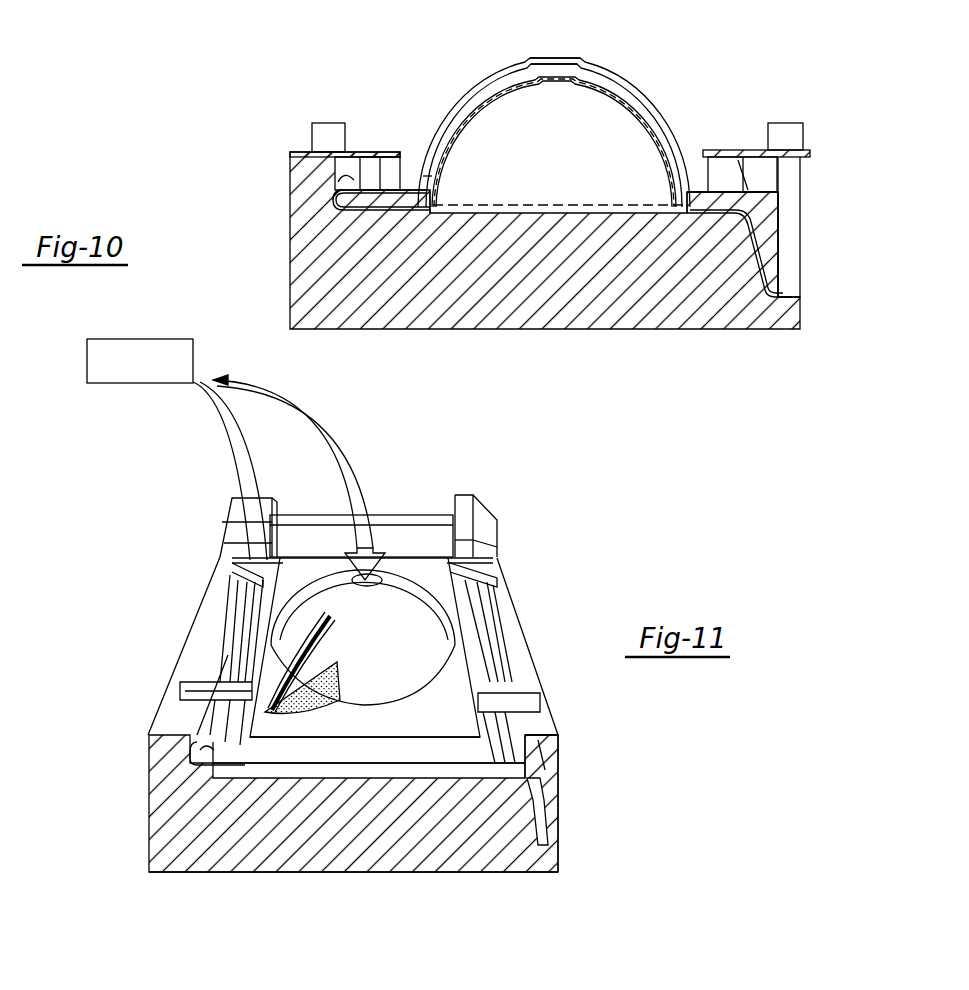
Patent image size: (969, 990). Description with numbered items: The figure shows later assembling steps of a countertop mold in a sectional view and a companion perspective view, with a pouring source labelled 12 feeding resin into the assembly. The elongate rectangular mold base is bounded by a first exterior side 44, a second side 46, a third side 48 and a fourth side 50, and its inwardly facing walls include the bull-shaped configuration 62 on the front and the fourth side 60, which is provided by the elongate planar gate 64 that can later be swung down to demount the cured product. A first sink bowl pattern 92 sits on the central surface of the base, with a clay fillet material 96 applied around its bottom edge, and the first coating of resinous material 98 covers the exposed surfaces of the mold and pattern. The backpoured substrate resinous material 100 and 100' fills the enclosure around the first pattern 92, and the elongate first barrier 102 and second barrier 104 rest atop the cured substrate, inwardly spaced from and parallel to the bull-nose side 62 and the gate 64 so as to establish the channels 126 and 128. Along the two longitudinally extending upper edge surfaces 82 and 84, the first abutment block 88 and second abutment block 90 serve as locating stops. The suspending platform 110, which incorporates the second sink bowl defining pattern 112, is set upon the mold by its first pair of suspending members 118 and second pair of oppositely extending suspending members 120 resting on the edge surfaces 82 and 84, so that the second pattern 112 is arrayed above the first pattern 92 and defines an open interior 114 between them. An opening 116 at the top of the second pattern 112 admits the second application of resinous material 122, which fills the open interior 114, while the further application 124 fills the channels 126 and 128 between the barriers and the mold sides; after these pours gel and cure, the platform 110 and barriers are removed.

In FIG. 11, the pouring device 12 is at (140, 338).
In FIG. 10, the first exterior side 44 is at (282, 283).
In FIG. 11, the first exterior side 44 is at (148, 840).
In FIG. 11, the second side 46 is at (407, 512).
In FIG. 11, the third side 48 is at (415, 850).
In FIG. 10, the fourth side 50 is at (814, 305).
In FIG. 11, the fourth side 50 is at (577, 796).
In FIG. 10, the fourth side 60 is at (772, 178).
In FIG. 11, the fourth side 60 is at (505, 762).
In FIG. 10, the inwardly bull-shaped configuration 62 is at (290, 172).
In FIG. 11, the inwardly bull-shaped configuration 62 is at (200, 760).
In FIG. 10, the gate 64 is at (790, 232).
In FIG. 11, the gate 64 is at (548, 820).
In FIG. 10, the first upwardly facing edge surface 82 is at (291, 150).
In FIG. 11, the first upwardly facing edge surface 82 is at (200, 639).
In FIG. 10, the second upwardly facing edge surface 84 is at (822, 157).
In FIG. 11, the second upwardly facing edge surface 84 is at (505, 607).
In FIG. 10, the first abutment block 88 is at (336, 121).
In FIG. 11, the first abutment block 88 is at (242, 522).
In FIG. 10, the second abutment block 90 is at (792, 122).
In FIG. 11, the second abutment block 90 is at (495, 530).
In FIG. 10, the first sink bowl pattern 92 is at (484, 117).
In FIG. 11, the first sink bowl pattern 92 is at (335, 648).
In FIG. 10, the clay fillet material 96 is at (618, 210).
In FIG. 10, the first coating of resinous material 98 is at (432, 176).
In FIG. 10, the substrate resinous material 100 is at (385, 144).
In FIG. 11, the substrate resinous material 100 is at (343, 694).
In FIG. 10, the substrate resinous material 100' is at (772, 253).
In FIG. 10, the first barrier 102 is at (366, 160).
In FIG. 11, the first barrier 102 is at (215, 770).
In FIG. 10, the second barrier 104 is at (727, 172).
In FIG. 11, the second barrier 104 is at (560, 760).
In FIG. 10, the suspending platform 110 is at (641, 70).
In FIG. 11, the suspending platform 110 is at (432, 572).
In FIG. 10, the second sink bowl defining pattern 112 is at (468, 97).
In FIG. 11, the second sink bowl defining pattern 112 is at (392, 611).
In FIG. 10, the open interior 114 is at (511, 85).
In FIG. 11, the open interior 114 is at (318, 632).
In FIG. 10, the opening 116 is at (548, 58).
In FIG. 11, the opening 116 is at (367, 588).
In FIG. 11, the first pair of suspending members 118 is at (190, 690).
In FIG. 11, the second pair of suspending members 120 is at (535, 682).
In FIG. 11, the second application of resinous material 122 is at (337, 437).
In FIG. 11, the further application of resinous material 124 is at (222, 425).
In FIG. 10, the channel 126 is at (338, 192).
In FIG. 11, the channel 126 is at (205, 745).
In FIG. 10, the channel 128 is at (751, 166).
In FIG. 11, the channel 128 is at (540, 742).